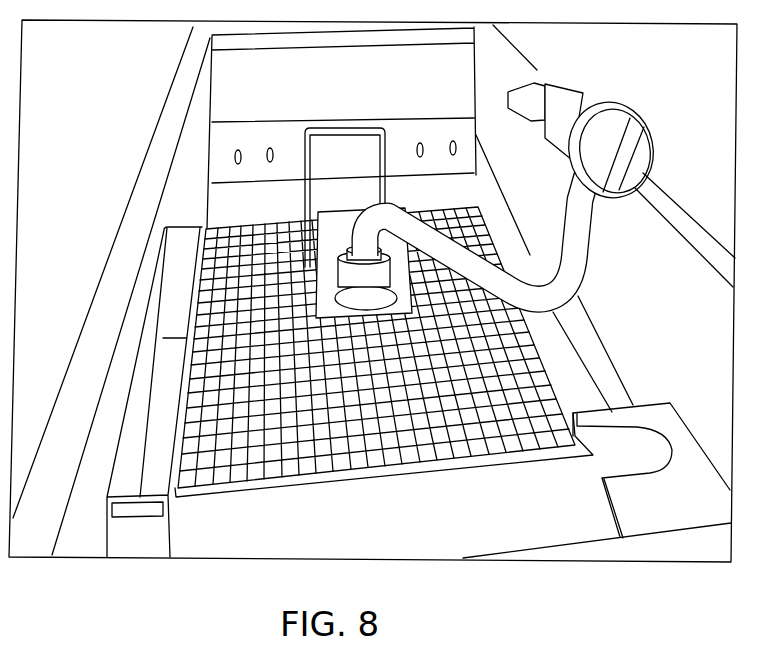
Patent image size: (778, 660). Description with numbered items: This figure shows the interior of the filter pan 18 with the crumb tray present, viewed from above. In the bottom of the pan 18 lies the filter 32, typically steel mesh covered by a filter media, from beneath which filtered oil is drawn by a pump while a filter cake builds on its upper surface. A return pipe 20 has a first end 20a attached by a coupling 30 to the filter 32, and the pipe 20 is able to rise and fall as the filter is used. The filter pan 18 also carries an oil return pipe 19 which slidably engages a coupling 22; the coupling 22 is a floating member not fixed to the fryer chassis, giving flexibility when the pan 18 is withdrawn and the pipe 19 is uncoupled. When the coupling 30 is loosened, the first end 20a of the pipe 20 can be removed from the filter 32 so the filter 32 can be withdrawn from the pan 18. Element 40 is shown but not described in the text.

The filter pan 18 is at (677, 200).
The oil return pipe 19 is at (527, 95).
The coupling 22 is at (650, 146).
The return pipe 20 is at (492, 282).
The first end of return pipe 20a is at (305, 218).
The coupling 30 is at (393, 260).
The filter 32 is at (542, 345).
The rail 40 is at (158, 296).